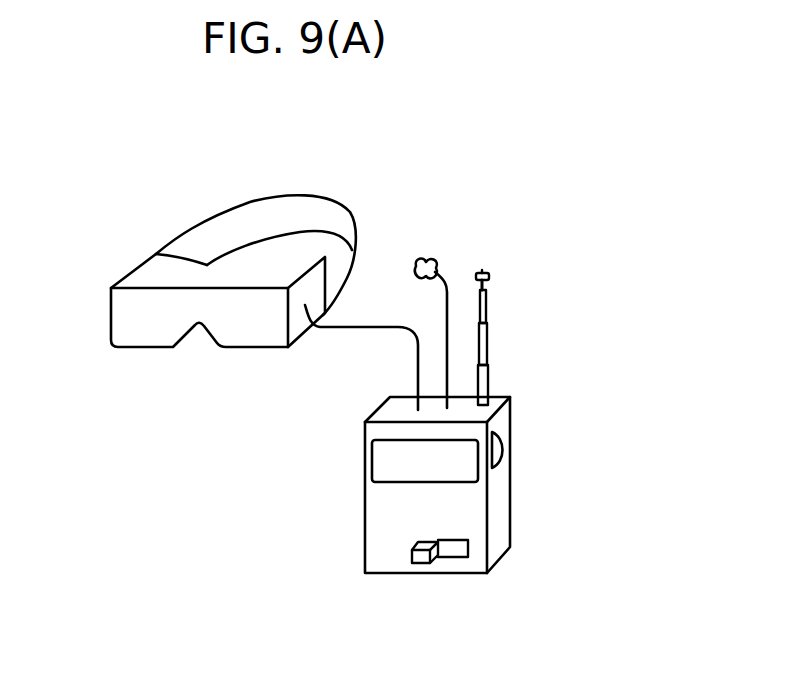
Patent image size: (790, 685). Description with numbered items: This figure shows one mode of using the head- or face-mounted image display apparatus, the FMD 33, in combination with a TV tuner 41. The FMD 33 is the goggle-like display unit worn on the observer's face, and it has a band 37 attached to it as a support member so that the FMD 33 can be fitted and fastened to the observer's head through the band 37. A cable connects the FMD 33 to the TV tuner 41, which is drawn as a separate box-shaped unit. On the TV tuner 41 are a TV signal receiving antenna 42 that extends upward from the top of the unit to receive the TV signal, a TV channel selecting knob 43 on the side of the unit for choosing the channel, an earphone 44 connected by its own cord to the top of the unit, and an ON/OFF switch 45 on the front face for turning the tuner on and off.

The FMD 33 is at (138, 330).
The band 37 is at (267, 200).
The TV tuner 41 is at (520, 408).
The TV signal receiving antenna 42 is at (488, 307).
The TV channel selecting knob 43 is at (504, 455).
The earphone 44 is at (433, 260).
The ON/OFF switch 45 is at (422, 562).